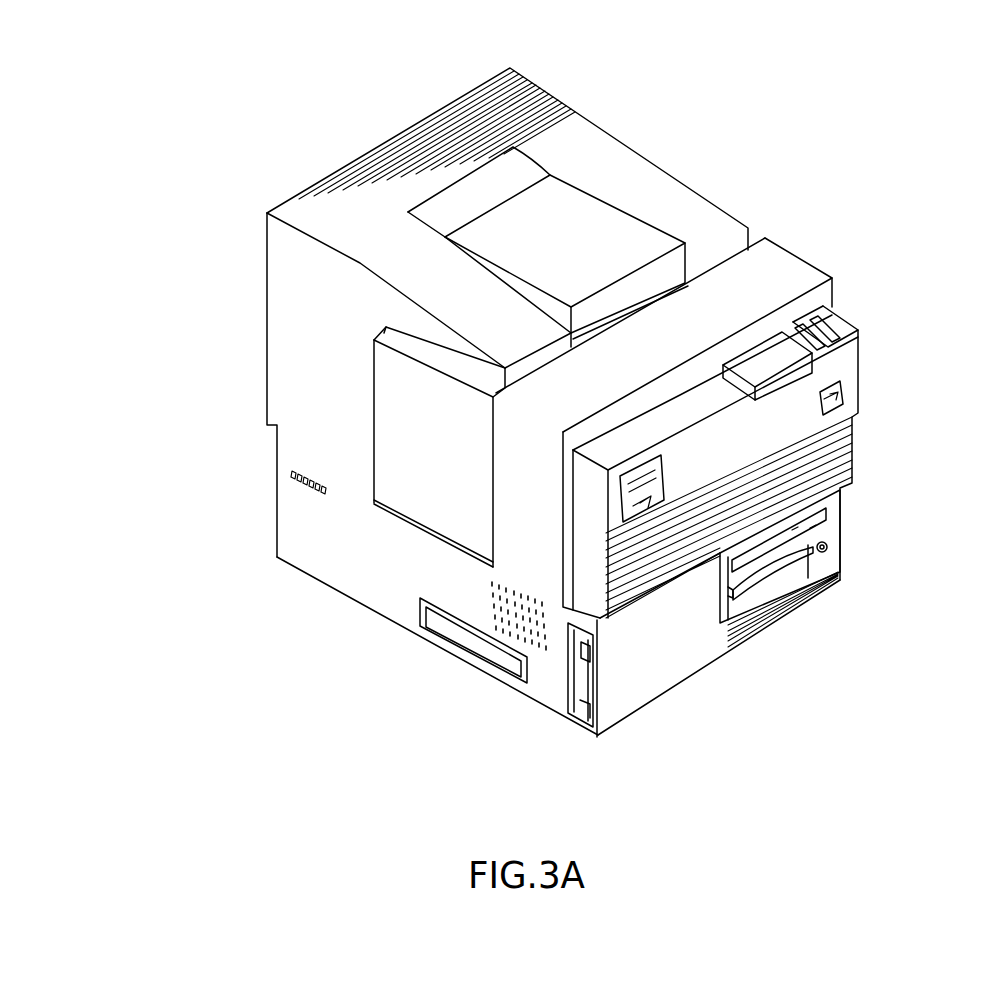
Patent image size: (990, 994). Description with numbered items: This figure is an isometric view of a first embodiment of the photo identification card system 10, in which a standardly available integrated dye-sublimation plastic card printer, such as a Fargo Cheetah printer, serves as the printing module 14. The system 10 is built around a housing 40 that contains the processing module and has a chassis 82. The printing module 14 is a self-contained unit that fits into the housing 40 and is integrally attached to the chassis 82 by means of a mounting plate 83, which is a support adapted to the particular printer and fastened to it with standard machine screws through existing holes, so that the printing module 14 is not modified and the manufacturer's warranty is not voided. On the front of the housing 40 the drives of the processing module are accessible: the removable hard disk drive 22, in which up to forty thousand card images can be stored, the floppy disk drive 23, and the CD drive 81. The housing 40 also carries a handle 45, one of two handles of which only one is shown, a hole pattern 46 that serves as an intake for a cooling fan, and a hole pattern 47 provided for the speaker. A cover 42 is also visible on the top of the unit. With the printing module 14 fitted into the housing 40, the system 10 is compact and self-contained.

The photo identification card system 10 is at (283, 173).
The printing module 14 is at (772, 278).
The hard disk drive 22 is at (822, 563).
The floppy disk drive 23 is at (590, 702).
The housing 40 is at (300, 335).
The paper tray cover 42 is at (602, 232).
The handle 45 is at (455, 635).
The hole pattern 46 is at (533, 633).
The hole pattern 47 is at (297, 480).
The CD drive 81 is at (822, 517).
The chassis 82 is at (667, 660).
The mounting plate 83 is at (390, 510).